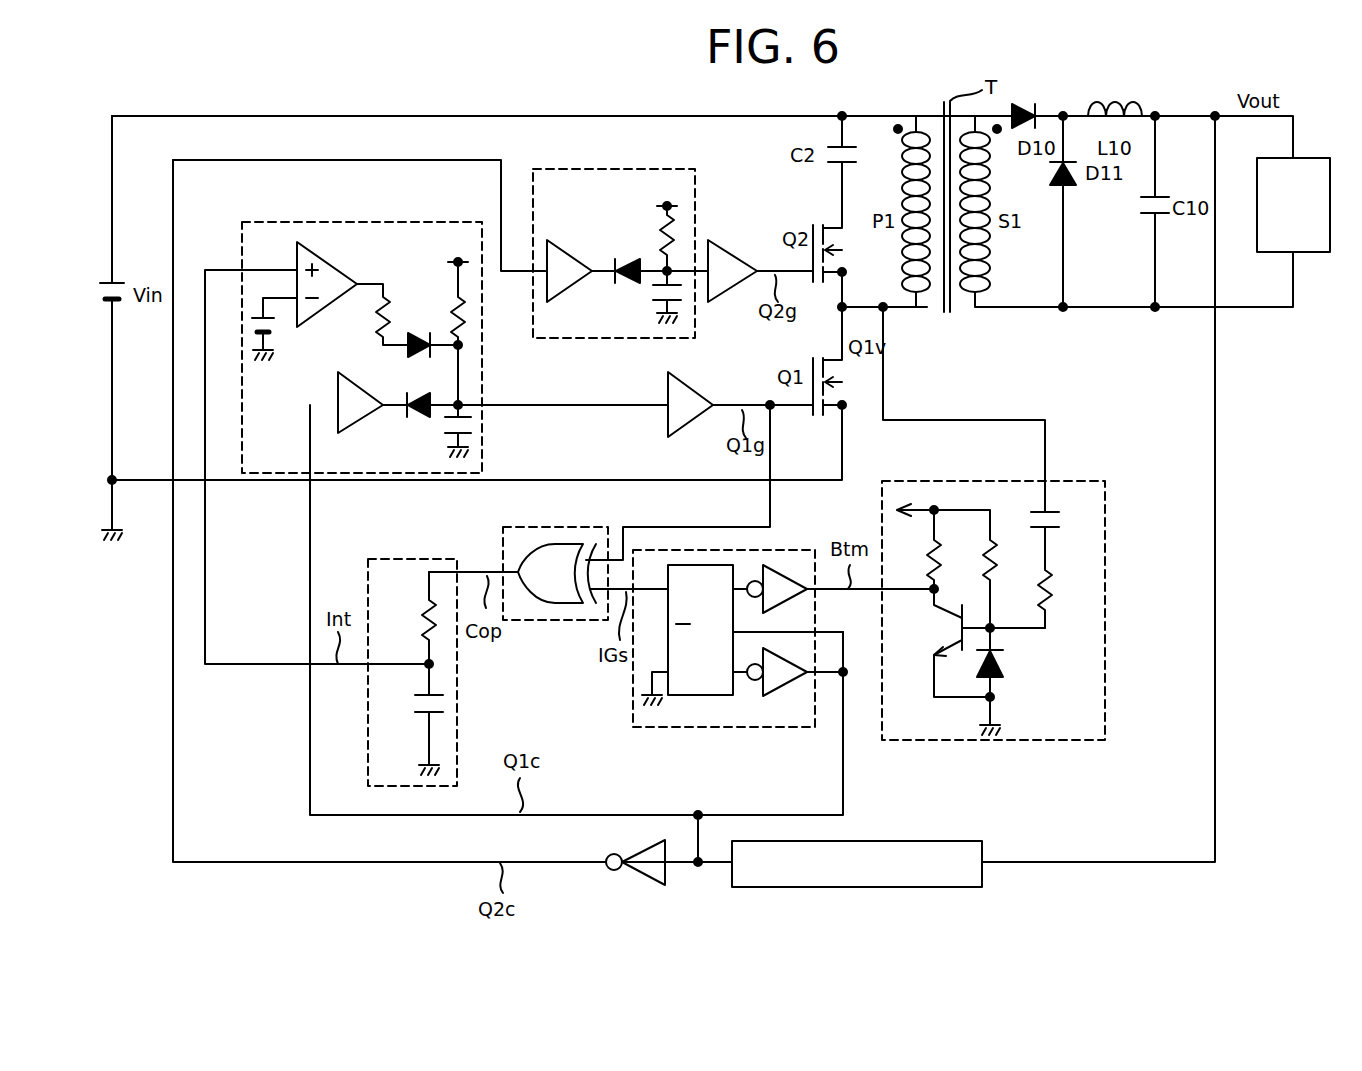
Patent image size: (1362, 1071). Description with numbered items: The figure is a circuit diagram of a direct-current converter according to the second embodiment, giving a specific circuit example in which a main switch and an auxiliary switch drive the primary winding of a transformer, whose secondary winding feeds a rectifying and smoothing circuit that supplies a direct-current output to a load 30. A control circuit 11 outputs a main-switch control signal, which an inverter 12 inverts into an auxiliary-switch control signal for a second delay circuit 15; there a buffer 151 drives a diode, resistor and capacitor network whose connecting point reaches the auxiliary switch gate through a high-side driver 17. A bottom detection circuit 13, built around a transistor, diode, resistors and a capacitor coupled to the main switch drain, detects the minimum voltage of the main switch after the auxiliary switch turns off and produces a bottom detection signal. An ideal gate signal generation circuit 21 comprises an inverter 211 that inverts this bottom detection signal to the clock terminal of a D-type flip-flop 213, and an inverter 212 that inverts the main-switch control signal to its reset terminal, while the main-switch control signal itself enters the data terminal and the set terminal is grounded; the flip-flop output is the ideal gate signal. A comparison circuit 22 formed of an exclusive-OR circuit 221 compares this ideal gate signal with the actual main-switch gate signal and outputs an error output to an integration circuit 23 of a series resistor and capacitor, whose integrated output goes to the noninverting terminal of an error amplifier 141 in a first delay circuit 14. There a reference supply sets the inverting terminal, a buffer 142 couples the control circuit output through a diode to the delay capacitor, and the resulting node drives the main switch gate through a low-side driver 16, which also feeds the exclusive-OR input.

The control circuit 11 is at (982, 878).
The inverter 12 is at (640, 878).
The bottom detection circuit 13 is at (1070, 481).
The first delay circuit 14 is at (455, 323).
The error amplifier 141 is at (368, 256).
The buffer 142 is at (338, 395).
The second delay circuit 15 is at (620, 232).
The buffer 151 is at (580, 238).
The low-side driver 16 is at (700, 380).
The high-side driver 17 is at (758, 238).
The ideal gate signal generation circuit 21 is at (724, 637).
The inverter 211 is at (790, 565).
The inverter 212 is at (790, 660).
The D-type flip-flop 213 is at (668, 634).
The comparison circuit 22 is at (557, 585).
The exclusive-OR circuit 221 is at (540, 603).
The integration circuit 23 is at (384, 559).
The load 30 is at (1308, 252).